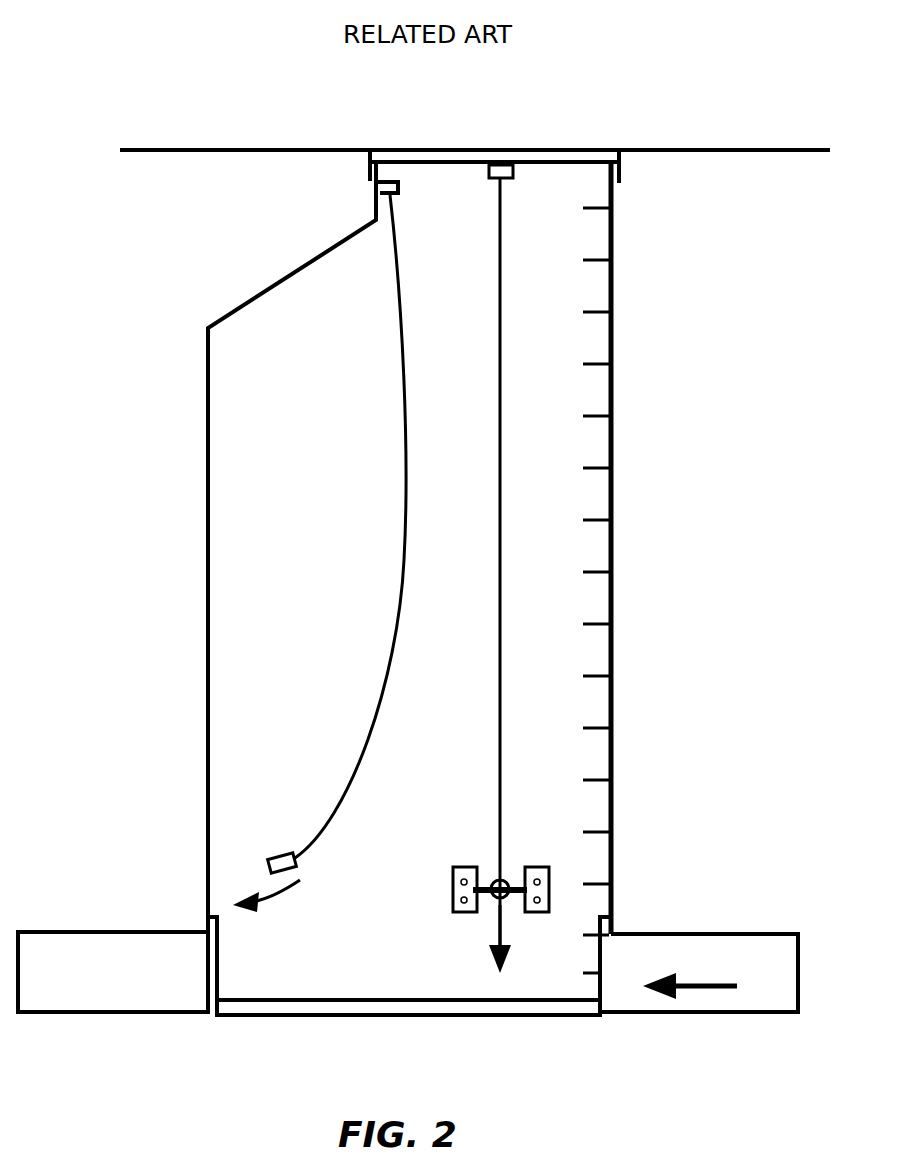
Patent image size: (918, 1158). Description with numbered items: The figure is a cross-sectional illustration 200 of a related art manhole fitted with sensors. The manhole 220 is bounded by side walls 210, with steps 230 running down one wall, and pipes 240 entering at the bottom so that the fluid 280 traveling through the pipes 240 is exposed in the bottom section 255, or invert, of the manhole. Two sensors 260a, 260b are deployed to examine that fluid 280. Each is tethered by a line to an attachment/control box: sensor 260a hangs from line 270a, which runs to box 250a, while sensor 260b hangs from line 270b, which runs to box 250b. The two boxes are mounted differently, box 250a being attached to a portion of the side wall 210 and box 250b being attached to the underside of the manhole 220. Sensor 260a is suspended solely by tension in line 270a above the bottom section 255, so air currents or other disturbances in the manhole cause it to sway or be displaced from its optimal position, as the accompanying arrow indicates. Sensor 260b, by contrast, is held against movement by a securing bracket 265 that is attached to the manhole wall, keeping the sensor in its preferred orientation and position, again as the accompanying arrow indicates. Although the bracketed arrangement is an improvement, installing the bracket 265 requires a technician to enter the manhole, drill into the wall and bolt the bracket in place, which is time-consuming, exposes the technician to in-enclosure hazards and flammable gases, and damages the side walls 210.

The cross-sectional illustration 200 is at (792, 33).
The side wall 210 is at (203, 520).
The manhole 220 is at (386, 148).
The steps 230 is at (611, 378).
The pipes 240 is at (133, 930).
The attachment/control box 250a is at (398, 186).
The attachment/control box 250b is at (508, 178).
The bottom section 255 is at (268, 1012).
The sensor 260a is at (255, 848).
The sensor 260b is at (498, 902).
The securing bracket 265 is at (528, 868).
The line 270a is at (398, 545).
The line 270b is at (500, 368).
The fluid 280 is at (705, 1000).